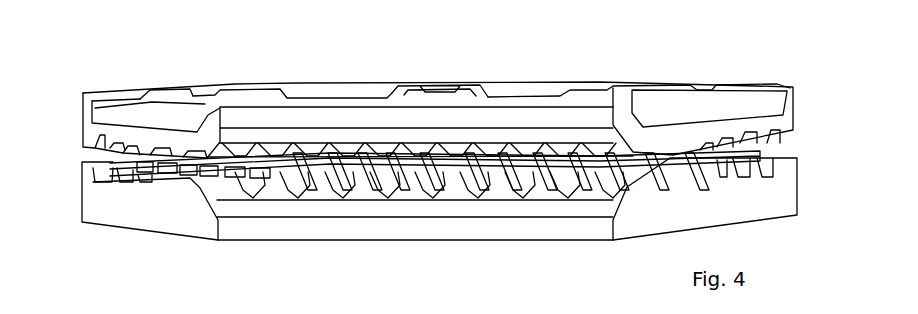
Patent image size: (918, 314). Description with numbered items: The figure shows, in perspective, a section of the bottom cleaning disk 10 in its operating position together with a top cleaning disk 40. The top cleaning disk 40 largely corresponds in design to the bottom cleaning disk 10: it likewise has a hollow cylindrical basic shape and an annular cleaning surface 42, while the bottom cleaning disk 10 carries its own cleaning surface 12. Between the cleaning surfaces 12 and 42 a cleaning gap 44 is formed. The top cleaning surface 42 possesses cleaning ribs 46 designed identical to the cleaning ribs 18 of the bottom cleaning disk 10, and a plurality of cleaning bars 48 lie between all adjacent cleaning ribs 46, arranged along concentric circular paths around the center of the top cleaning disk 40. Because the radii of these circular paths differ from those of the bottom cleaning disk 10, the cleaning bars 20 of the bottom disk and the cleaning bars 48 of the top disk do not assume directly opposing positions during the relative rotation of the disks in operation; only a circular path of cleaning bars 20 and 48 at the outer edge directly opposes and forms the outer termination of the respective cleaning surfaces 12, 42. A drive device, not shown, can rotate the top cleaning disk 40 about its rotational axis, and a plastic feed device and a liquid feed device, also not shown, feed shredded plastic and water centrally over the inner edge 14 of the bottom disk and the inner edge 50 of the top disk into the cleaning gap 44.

The bottom cleaning disk 10 is at (144, 213).
The cleaning surface 12 is at (133, 173).
The inner edge 14 is at (460, 233).
The cleaning ribs 18 is at (331, 152).
The cleaning bars 20 is at (358, 158).
The top cleaning disk 40 is at (88, 126).
The cleaning surface 42 is at (121, 147).
The cleaning gap 44 is at (763, 152).
The cleaning ribs 46 is at (222, 155).
The cleaning bars 48 is at (110, 147).
The inner edge 50 is at (473, 130).